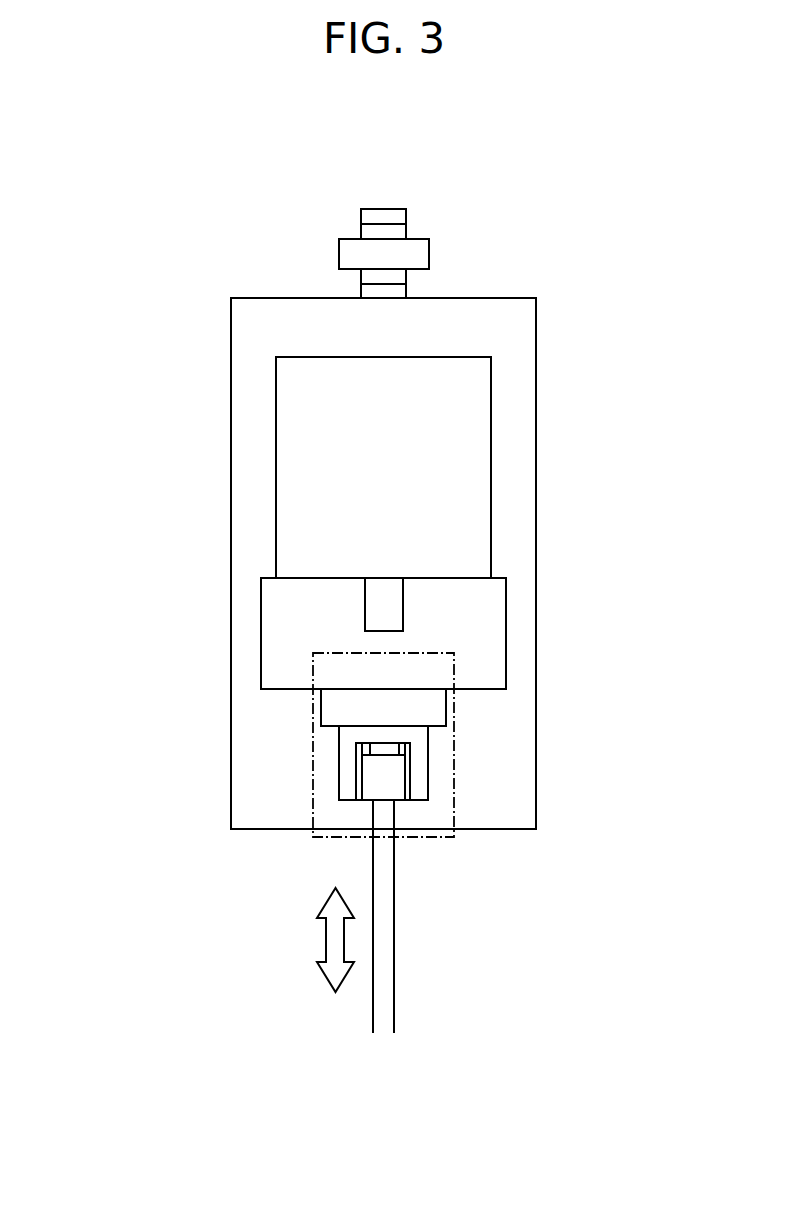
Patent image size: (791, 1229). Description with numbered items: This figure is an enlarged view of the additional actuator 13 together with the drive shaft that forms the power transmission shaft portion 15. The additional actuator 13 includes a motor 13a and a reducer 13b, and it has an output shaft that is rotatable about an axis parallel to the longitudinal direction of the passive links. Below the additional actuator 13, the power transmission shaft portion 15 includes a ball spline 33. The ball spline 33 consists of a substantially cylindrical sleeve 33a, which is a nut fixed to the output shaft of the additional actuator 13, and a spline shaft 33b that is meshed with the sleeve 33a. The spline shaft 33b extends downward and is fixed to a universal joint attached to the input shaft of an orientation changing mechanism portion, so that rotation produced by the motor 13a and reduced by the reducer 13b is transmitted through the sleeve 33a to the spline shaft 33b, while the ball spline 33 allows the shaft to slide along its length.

The additional actuator 13 is at (113, 462).
The motor 13a is at (276, 483).
The reducer 13b is at (261, 629).
The ball spline 33 is at (162, 743).
The sleeve 33a is at (338, 763).
The spline shaft 33b is at (373, 863).
The power transmission shaft portion 15 is at (430, 955).